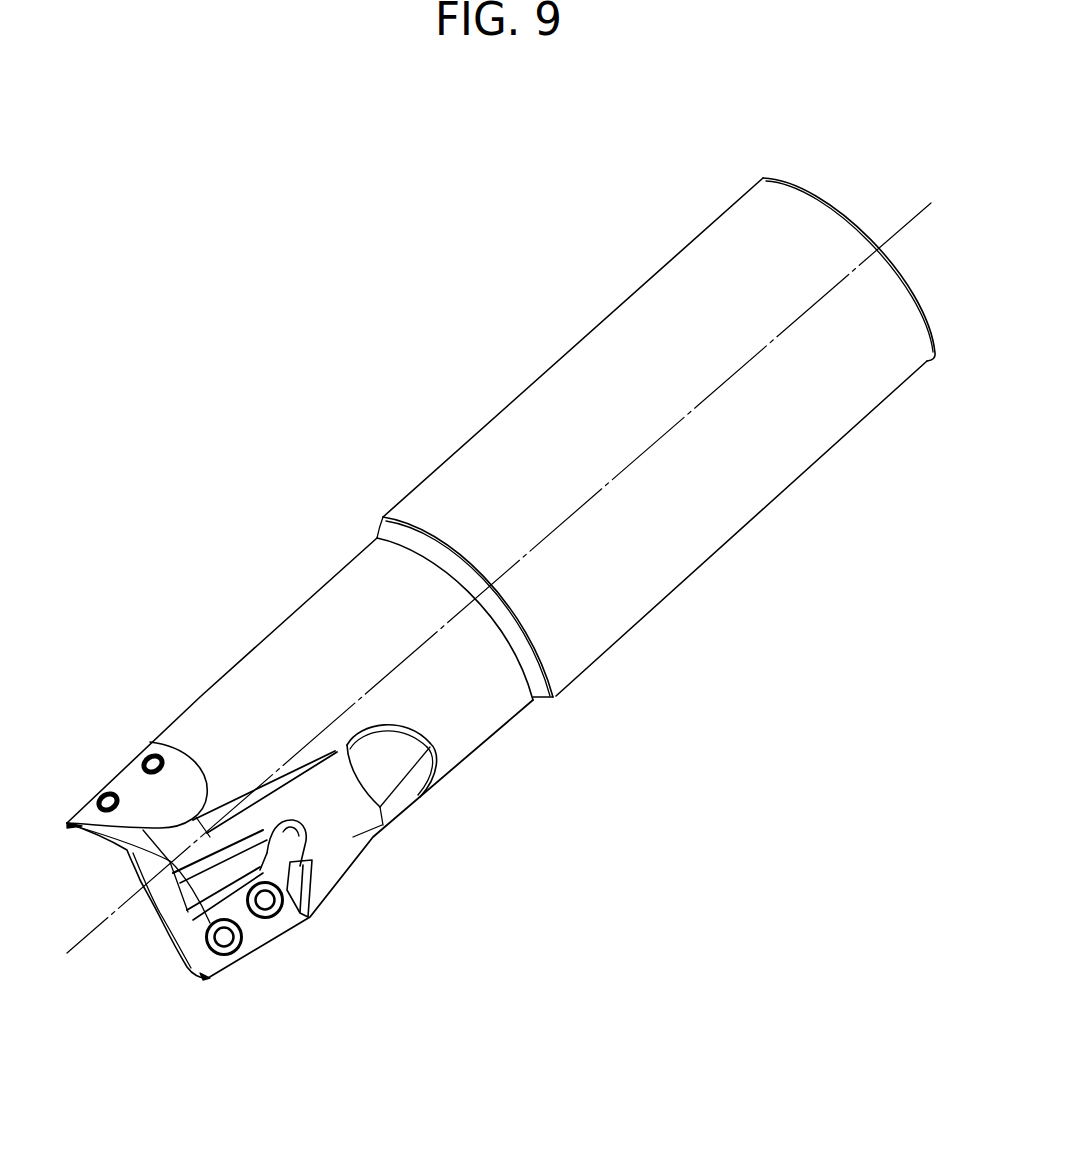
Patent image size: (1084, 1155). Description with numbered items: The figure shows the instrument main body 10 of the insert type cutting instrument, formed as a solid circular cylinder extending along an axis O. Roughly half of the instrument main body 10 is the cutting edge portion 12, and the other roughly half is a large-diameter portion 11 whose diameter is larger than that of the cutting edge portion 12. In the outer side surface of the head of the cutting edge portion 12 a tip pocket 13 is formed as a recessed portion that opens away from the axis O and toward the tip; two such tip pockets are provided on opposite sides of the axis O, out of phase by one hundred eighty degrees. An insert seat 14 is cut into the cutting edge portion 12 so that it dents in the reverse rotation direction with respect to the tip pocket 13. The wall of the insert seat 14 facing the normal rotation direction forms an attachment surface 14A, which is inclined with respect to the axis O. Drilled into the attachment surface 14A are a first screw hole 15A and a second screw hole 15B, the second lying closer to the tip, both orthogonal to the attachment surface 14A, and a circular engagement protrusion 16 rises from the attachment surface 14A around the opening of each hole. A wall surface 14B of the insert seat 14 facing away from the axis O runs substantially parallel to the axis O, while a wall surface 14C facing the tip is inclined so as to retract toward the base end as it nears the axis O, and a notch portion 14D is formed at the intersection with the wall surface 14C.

The instrument main body 10 is at (450, 260).
The axis O is at (920, 208).
The large-diameter portion 11 is at (763, 492).
The cutting edge portion 12 is at (330, 596).
The tip pocket 13 is at (410, 767).
The insert seat 14 is at (315, 793).
The attachment surface 14A is at (238, 913).
The wall surface 14B is at (203, 889).
The wall surface 14C is at (310, 920).
The notch portion 14D is at (299, 845).
The first screw hole 15A is at (282, 917).
The second screw hole 15B is at (227, 952).
The circular engagement protrusion 16 is at (204, 953).